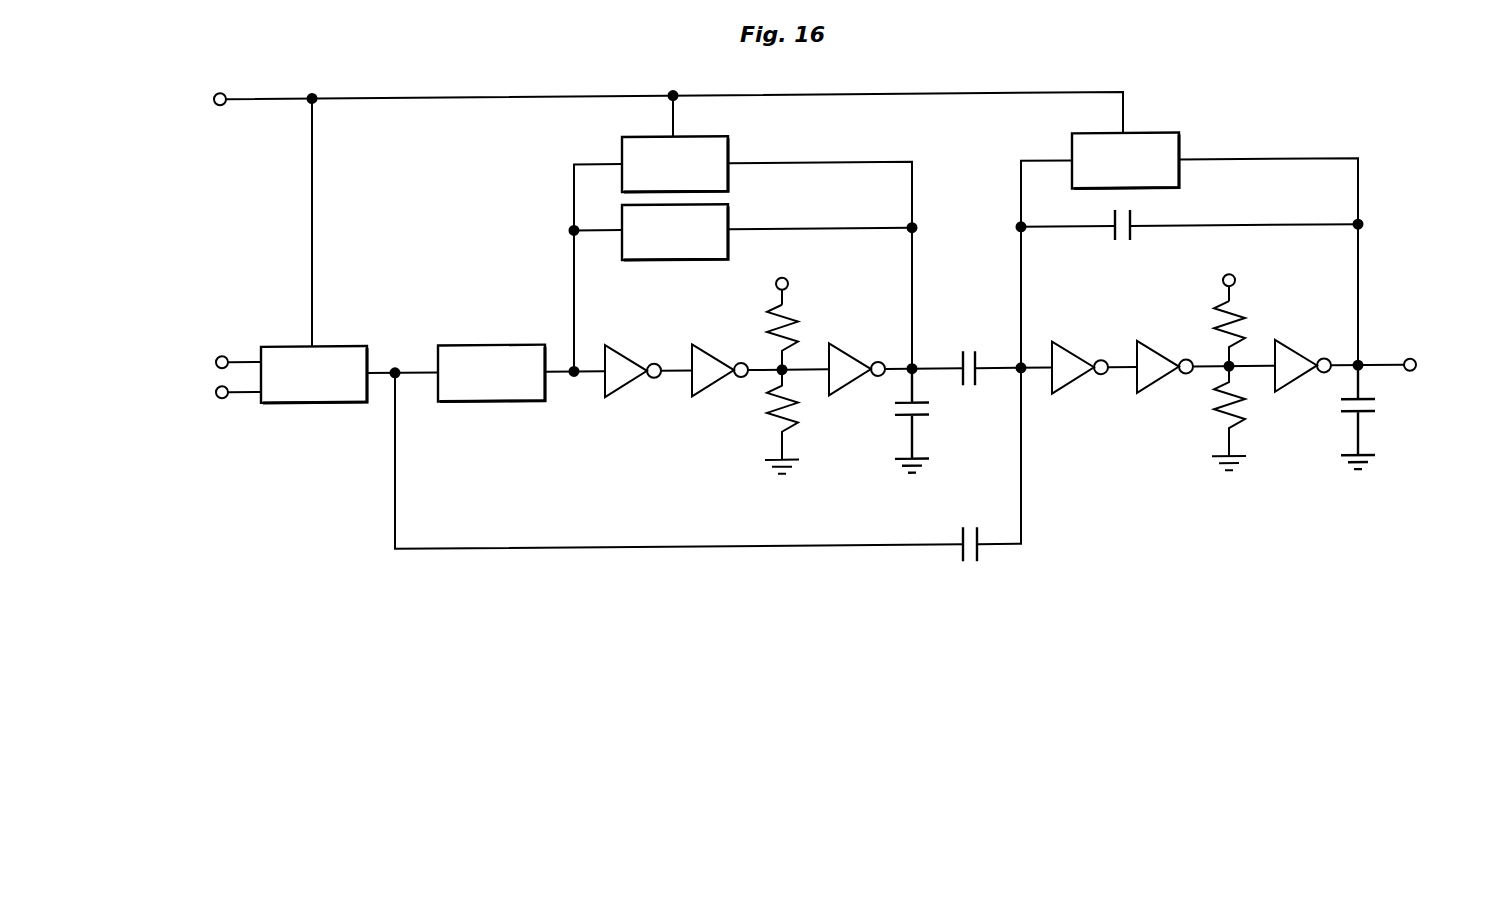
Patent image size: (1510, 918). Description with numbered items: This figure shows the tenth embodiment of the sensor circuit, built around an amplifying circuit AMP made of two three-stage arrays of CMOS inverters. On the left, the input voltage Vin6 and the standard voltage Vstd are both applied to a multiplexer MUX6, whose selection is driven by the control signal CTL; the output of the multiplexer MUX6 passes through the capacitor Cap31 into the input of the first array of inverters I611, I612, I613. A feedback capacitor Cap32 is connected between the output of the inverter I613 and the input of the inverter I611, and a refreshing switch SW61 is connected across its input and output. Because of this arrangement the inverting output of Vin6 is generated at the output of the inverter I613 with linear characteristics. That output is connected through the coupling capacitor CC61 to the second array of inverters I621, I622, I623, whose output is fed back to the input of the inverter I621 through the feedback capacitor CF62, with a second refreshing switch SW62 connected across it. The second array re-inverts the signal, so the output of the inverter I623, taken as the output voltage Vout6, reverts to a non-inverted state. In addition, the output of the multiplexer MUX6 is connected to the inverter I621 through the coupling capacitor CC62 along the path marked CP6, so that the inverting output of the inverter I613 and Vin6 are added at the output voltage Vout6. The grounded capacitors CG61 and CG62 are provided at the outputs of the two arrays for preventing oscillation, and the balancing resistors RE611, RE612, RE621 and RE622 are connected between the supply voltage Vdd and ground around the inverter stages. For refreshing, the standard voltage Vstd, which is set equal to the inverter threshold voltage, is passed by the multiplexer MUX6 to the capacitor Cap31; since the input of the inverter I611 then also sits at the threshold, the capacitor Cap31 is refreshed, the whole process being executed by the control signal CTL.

The control signal CTL is at (637, 213).
The standard voltage Vstd is at (205, 362).
The input voltage Vin6 is at (205, 392).
The multiplexer MUX6 is at (349, 373).
The capacitor Cap31 is at (521, 372).
The refreshing switch SW61 is at (743, 253).
The feedback capacitor Cap32 is at (743, 232).
The CMOS inverter I611 is at (647, 358).
The CMOS inverter I612 is at (759, 357).
The CMOS inverter I613 is at (893, 385).
The supply voltage Vdd is at (1006, 276).
The balancing resistor RE611 is at (820, 335).
The balancing resistor RE612 is at (745, 422).
The grounded capacitor CG61 is at (946, 420).
The coupling capacitor CC61 is at (995, 354).
The coupling capacitor CC62 is at (708, 467).
The refreshing switch SW62 is at (1189, 249).
The feedback capacitor CF62 is at (1190, 243).
The CMOS inverter I621 is at (1092, 353).
The CMOS inverter I622 is at (1206, 352).
The CMOS inverter I623 is at (1336, 379).
The balancing resistor RE621 is at (1267, 331).
The balancing resistor RE622 is at (1191, 418).
The grounded capacitor CG62 is at (1393, 416).
The output voltage Vout6 is at (1447, 364).
The amplifying circuit AMP is at (1286, 152).
The coupling path CP6 is at (1047, 530).